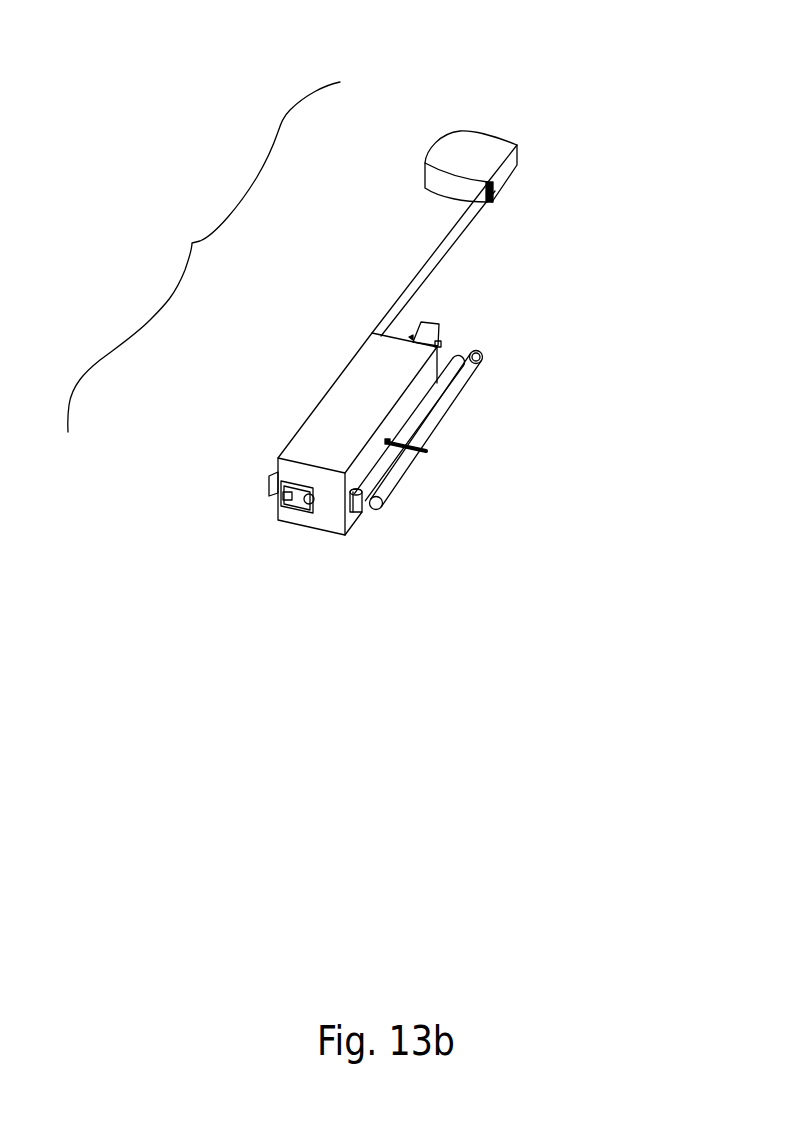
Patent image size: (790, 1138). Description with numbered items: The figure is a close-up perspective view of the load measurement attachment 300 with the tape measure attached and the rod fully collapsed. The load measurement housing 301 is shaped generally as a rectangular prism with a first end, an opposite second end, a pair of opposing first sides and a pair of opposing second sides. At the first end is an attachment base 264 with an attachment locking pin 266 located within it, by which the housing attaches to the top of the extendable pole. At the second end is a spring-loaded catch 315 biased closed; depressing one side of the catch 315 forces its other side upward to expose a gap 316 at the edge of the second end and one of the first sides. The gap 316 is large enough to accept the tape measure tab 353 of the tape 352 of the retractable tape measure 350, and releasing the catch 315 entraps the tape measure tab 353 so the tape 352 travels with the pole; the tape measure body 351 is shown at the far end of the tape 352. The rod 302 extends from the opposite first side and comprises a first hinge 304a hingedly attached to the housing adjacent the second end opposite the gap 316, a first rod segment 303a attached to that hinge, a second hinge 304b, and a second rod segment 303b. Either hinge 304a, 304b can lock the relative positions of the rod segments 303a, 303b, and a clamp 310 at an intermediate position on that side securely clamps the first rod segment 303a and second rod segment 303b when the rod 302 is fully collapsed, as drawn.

The load measurement attachment 300 is at (225, 503).
The load measurement housing 301 is at (333, 413).
The rod 302 is at (500, 404).
The first rod segment 303a is at (455, 400).
The second rod segment 303b is at (433, 436).
The first hinge 304a is at (376, 526).
The second hinge 304b is at (483, 362).
The clamp 310 is at (403, 449).
The catch 315 is at (303, 500).
The gap 316 is at (278, 498).
The attachment base 264 is at (440, 327).
The attachment locking pin 266 is at (442, 344).
The retractable tape measure 350 is at (186, 243).
The knob 351 is at (462, 148).
The tape 352 is at (430, 268).
The tape measure tab 353 is at (272, 483).